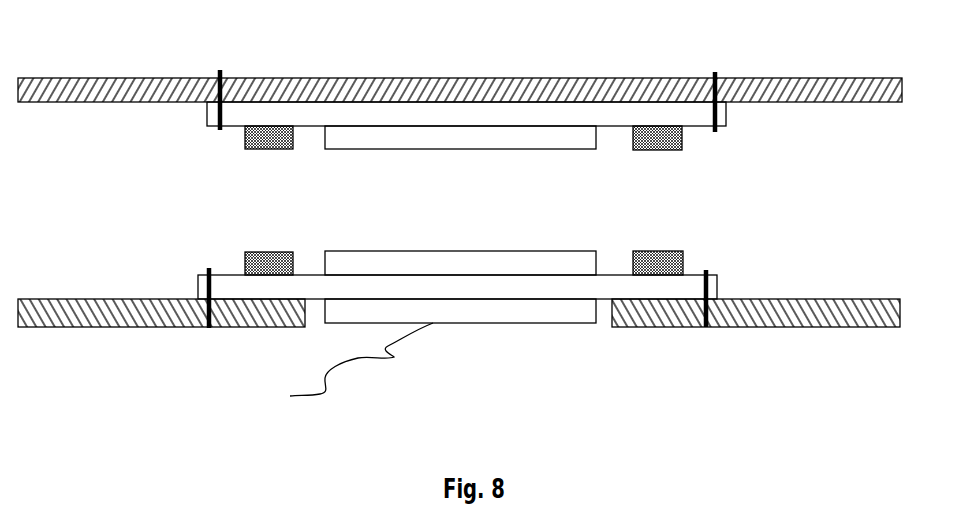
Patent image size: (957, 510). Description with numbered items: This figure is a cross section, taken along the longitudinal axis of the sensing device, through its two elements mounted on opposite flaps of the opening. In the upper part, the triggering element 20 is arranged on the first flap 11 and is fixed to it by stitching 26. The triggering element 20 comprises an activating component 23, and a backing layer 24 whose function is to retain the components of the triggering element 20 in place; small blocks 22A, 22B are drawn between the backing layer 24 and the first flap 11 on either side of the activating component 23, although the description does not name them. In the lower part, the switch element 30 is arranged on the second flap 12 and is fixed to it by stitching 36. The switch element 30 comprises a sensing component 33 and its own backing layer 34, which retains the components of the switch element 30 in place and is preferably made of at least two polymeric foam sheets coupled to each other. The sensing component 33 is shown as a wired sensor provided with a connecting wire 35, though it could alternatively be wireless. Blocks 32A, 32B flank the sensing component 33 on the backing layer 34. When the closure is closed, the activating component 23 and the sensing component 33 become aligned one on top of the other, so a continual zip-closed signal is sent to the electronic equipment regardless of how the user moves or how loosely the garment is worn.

The first flap 11 is at (807, 77).
The second flap 12 is at (833, 331).
The triggering element 20 is at (205, 143).
The first stand-off 22A is at (267, 151).
The second stand-off 22B is at (655, 151).
The activating component 23 is at (442, 142).
The backing layer 24 is at (392, 113).
The stitching 26 is at (222, 66).
The switch element 30 is at (740, 270).
The third stand-off 32A is at (257, 258).
The fourth stand-off 32B is at (678, 252).
The sensing component 33 is at (443, 260).
The backing layer 34 is at (513, 289).
The connecting wire 35 is at (362, 367).
The stitching 36 is at (208, 268).